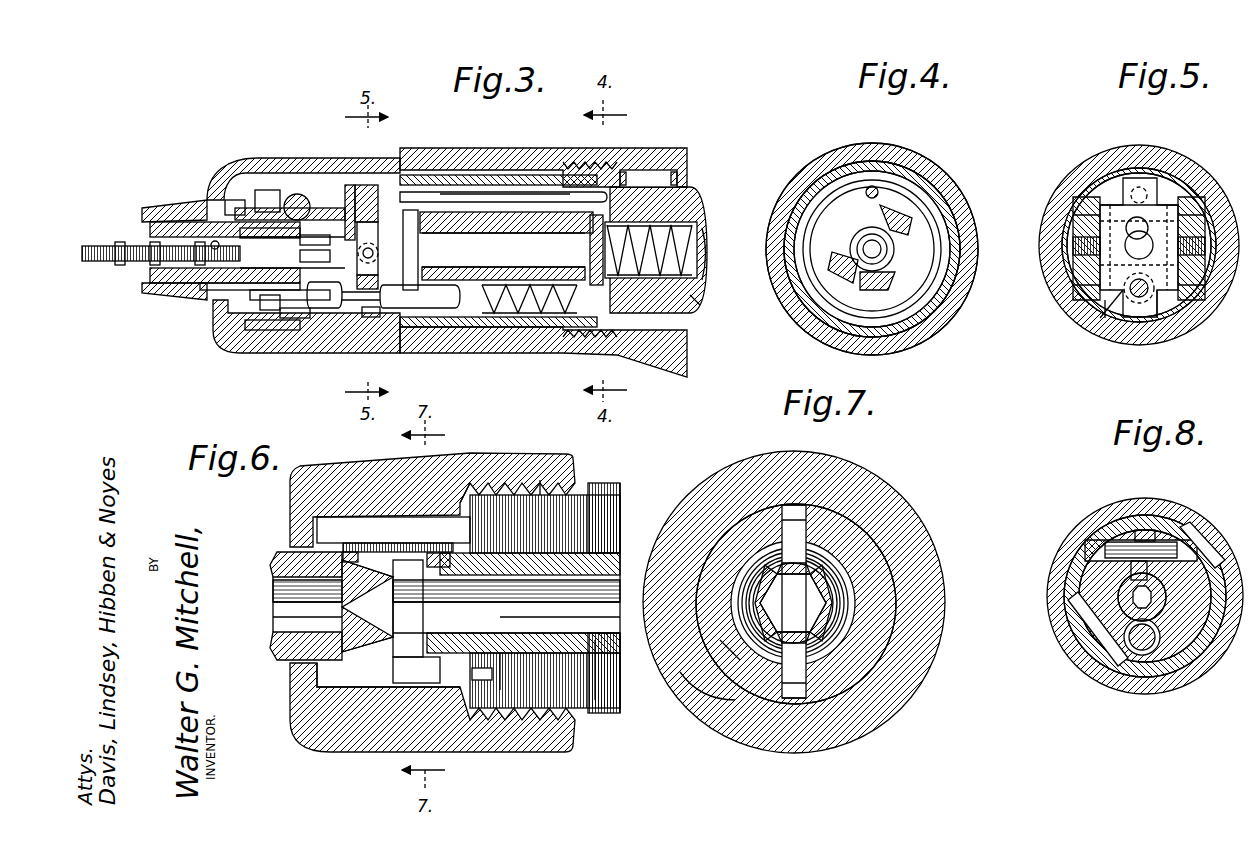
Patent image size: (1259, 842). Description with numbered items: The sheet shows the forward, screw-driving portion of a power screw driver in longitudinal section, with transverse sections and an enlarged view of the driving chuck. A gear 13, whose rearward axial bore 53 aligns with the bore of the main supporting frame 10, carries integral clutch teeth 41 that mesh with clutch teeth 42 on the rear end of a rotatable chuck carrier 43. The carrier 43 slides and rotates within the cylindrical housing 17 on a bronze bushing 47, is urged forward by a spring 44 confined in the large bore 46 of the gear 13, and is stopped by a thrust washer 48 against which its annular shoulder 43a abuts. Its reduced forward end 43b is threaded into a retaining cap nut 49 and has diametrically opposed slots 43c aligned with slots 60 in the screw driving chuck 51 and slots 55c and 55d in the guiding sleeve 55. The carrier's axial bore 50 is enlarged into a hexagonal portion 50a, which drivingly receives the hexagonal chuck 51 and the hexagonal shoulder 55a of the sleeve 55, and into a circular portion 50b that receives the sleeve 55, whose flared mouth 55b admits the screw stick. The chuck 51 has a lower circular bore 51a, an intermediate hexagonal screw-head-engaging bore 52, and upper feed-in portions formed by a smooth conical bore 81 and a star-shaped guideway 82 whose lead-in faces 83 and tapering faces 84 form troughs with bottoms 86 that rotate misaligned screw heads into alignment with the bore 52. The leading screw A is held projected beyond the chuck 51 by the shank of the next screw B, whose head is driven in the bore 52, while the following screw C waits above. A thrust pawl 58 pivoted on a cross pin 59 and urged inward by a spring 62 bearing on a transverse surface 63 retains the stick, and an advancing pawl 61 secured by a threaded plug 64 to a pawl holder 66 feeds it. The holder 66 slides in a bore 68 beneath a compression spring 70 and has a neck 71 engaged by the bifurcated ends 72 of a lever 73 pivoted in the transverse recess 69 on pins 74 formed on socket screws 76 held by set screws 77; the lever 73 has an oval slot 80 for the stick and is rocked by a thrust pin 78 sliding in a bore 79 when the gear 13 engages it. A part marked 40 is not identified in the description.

In FIG. 3, the main supporting frame 10 is at (680, 150).
In FIG. 4, the main supporting frame 10 is at (935, 168).
In FIG. 3, the gear 13 is at (698, 195).
In FIG. 3, the cylindrical housing 17 is at (262, 157).
In FIG. 5, the cylindrical housing 17 is at (1085, 175).
In FIG. 8, the cylindrical housing 17 is at (1070, 652).
In FIG. 3, the slot 40 is at (648, 172).
In FIG. 3, the clutch teeth 41 is at (592, 262).
In FIG. 4, the clutch teeth 41 is at (912, 215).
In FIG. 4, the clutch teeth 42 is at (915, 228).
In FIG. 5, the clutch teeth 42 is at (1068, 215).
In FIG. 3, the chuck carrier 43 is at (440, 215).
In FIG. 4, the chuck carrier 43 is at (894, 249).
In FIG. 5, the chuck carrier 43 is at (1073, 230).
In FIG. 6, the chuck carrier 43 is at (595, 490).
In FIG. 7, the chuck carrier 43 is at (715, 690).
In FIG. 8, the chuck carrier 43 is at (1050, 622).
In FIG. 3, the annular shoulder 43a is at (250, 330).
In FIG. 6, the lower end of chuck carrier 43b is at (325, 670).
In FIG. 6, the slots 43c is at (482, 680).
In FIG. 7, the slots 43c is at (790, 505).
In FIG. 3, the spring 44 is at (692, 226).
In FIG. 4, the spring 44 is at (887, 252).
In FIG. 3, the large bore 46 is at (700, 300).
In FIG. 3, the cylindrical bushing 47 is at (440, 330).
In FIG. 4, the cylindrical bushing 47 is at (812, 185).
In FIG. 5, the cylindrical bushing 47 is at (1160, 200).
In FIG. 3, the thrust washer 48 is at (232, 345).
In FIG. 3, the retaining cap nut 49 is at (160, 292).
In FIG. 6, the retaining cap nut 49 is at (375, 465).
In FIG. 7, the retaining cap nut 49 is at (910, 685).
In FIG. 3, the axial bore 50 is at (480, 258).
In FIG. 4, the axial bore 50 is at (870, 258).
In FIG. 5, the axial bore 50 is at (1128, 240).
In FIG. 3, the enlarged bore portion 50a is at (230, 284).
In FIG. 6, the enlarged bore portion 50a is at (405, 660).
In FIG. 7, the enlarged bore portion 50a is at (700, 690).
In FIG. 3, the enlarged bore portion 50b is at (322, 258).
In FIG. 6, the enlarged bore portion 50b is at (545, 490).
In FIG. 3, the screw driving chuck 51 is at (160, 272).
In FIG. 6, the screw driving chuck 51 is at (272, 556).
In FIG. 7, the screw driving chuck 51 is at (845, 565).
In FIG. 3, the lower circular portion 51a is at (150, 236).
In FIG. 6, the lower circular portion 51a is at (275, 580).
In FIG. 6, the screw head engaging portion 52 is at (290, 605).
In FIG. 3, the axial bore 53 is at (708, 248).
In FIG. 3, the guiding sleeve 55 is at (322, 217).
In FIG. 6, the guiding sleeve 55 is at (596, 700).
In FIG. 8, the guiding sleeve 55 is at (1183, 558).
In FIG. 3, the annular shoulder 55a is at (260, 300).
In FIG. 6, the annular shoulder 55a is at (505, 690).
In FIG. 8, the annular shoulder 55a is at (1200, 662).
In FIG. 3, the flared mouth 55b is at (322, 240).
In FIG. 3, the slot 55c is at (240, 233).
In FIG. 6, the slot 55c is at (466, 490).
In FIG. 3, the slot 55d is at (290, 318).
In FIG. 3, the thrust pawl 58 is at (235, 210).
In FIG. 8, the thrust pawl 58 is at (1145, 540).
In FIG. 3, the cross pin 59 is at (298, 195).
In FIG. 8, the cross pin 59 is at (1160, 545).
In FIG. 6, the slots 60 is at (395, 553).
In FIG. 7, the slots 60 is at (812, 520).
In FIG. 3, the advancing pawl 61 is at (268, 300).
In FIG. 3, the spring 62 is at (262, 190).
In FIG. 8, the spring 62 is at (1138, 532).
In FIG. 3, the transverse surface 63 is at (348, 200).
In FIG. 8, the threaded plug 64 is at (1095, 660).
In FIG. 3, the pawl holder 66 is at (410, 308).
In FIG. 5, the pawl holder 66 is at (1125, 300).
In FIG. 8, the pawl holder 66 is at (1144, 655).
In FIG. 3, the bore 68 is at (310, 310).
In FIG. 8, the bore 68 is at (1125, 655).
In FIG. 3, the transverse recess 69 is at (408, 215).
In FIG. 5, the transverse recess 69 is at (1128, 222).
In FIG. 3, the compression spring 70 is at (545, 315).
In FIG. 3, the neck portion 71 is at (380, 277).
In FIG. 5, the neck portion 71 is at (1139, 298).
In FIG. 3, the bifurcated ends 72 is at (365, 318).
In FIG. 5, the bifurcated ends 72 is at (1160, 300).
In FIG. 3, the lever 73 is at (362, 200).
In FIG. 5, the lever 73 is at (1108, 305).
In FIG. 3, the pivot pins 74 is at (378, 252).
In FIG. 5, the pivot pins 74 is at (1178, 225).
In FIG. 5, the socket screws 76 is at (1195, 210).
In FIG. 5, the set screws 77 is at (1205, 245).
In FIG. 3, the thrust pin 78 is at (522, 192).
In FIG. 4, the thrust pin 78 is at (880, 188).
In FIG. 5, the thrust pin 78 is at (1143, 172).
In FIG. 3, the bore 79 is at (505, 185).
In FIG. 3, the oval slot 80 is at (378, 228).
In FIG. 5, the oval slot 80 is at (1160, 215).
In FIG. 6, the conical bore 81 is at (432, 555).
In FIG. 7, the conical bore 81 is at (833, 580).
In FIG. 6, the feed-in guideway 82 is at (352, 553).
In FIG. 7, the feed-in guideway 82 is at (745, 585).
In FIG. 6, the lead-in faces 83 is at (385, 612).
In FIG. 7, the lead-in faces 83 is at (832, 608).
In FIG. 6, the tapering faces 84 is at (375, 640).
In FIG. 7, the tapering faces 84 is at (828, 597).
In FIG. 6, the trough bottoms 86 is at (400, 605).
In FIG. 7, the trough bottoms 86 is at (833, 622).
In FIG. 3, the leading screw A is at (92, 262).
In FIG. 3, the second screw B is at (118, 264).
In FIG. 3, the screw C is at (212, 243).